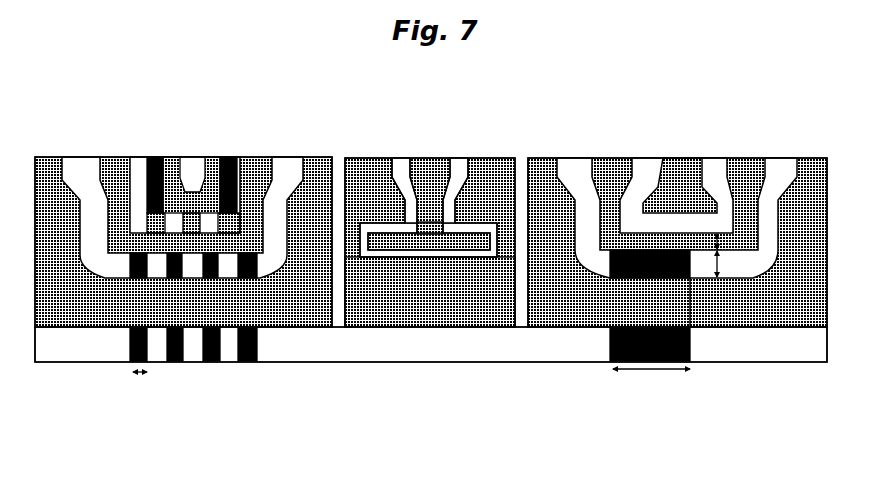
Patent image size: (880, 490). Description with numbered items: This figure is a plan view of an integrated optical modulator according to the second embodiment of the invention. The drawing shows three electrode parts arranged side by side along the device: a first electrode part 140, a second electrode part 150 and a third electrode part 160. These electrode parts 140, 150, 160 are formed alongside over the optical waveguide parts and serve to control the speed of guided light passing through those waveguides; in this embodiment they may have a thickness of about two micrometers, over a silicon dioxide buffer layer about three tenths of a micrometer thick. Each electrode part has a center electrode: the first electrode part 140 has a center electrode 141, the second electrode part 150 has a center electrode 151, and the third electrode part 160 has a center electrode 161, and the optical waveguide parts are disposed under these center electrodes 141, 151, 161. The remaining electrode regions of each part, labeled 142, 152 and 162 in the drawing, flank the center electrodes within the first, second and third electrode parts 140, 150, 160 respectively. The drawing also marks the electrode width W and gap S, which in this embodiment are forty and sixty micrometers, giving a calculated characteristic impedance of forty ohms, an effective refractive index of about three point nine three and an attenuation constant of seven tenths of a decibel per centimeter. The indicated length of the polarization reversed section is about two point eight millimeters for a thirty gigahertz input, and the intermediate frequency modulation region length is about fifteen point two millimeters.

The first electrode part 140 is at (325, 143).
The center electrode 141 is at (157, 240).
The ground electrode 142 is at (197, 308).
The second electrode part 150 is at (510, 143).
The center electrode 151 is at (423, 245).
The ground electrode 152 is at (442, 310).
The third electrode part 160 is at (818, 145).
The center electrode 161 is at (677, 237).
The ground electrode 162 is at (713, 307).